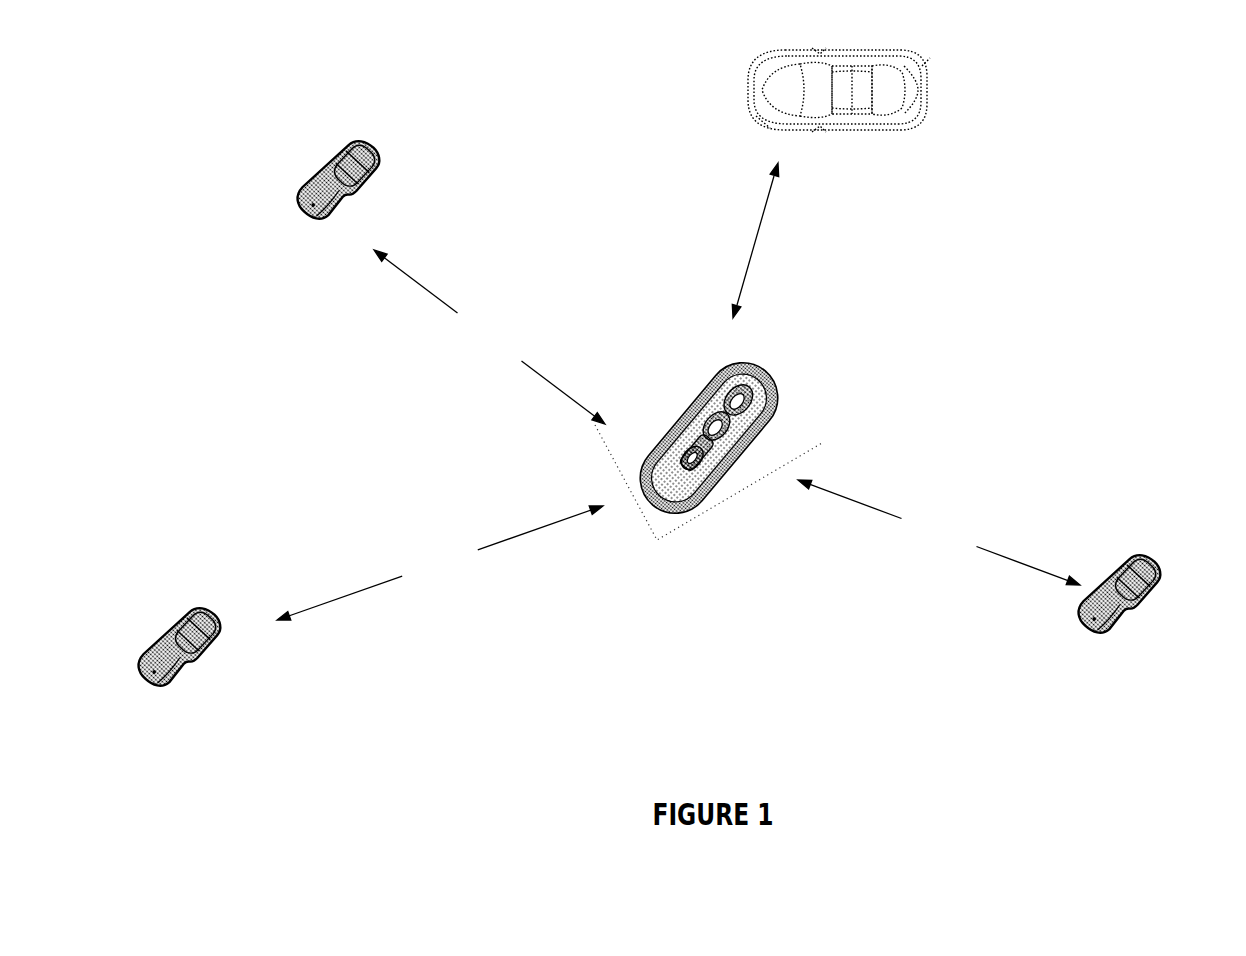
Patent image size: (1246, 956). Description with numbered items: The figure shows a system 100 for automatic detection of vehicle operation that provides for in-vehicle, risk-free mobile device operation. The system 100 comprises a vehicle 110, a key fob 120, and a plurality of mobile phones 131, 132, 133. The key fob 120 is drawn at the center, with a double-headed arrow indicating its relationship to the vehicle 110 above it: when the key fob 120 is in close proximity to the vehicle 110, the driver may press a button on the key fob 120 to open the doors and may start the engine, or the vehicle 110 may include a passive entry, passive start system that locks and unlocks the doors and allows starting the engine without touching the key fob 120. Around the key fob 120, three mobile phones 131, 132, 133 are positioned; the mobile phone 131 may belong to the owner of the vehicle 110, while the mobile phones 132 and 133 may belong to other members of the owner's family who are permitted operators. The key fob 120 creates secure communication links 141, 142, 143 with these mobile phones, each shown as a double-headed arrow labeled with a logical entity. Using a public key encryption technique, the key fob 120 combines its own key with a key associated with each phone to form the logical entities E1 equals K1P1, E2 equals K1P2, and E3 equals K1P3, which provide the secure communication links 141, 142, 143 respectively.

The system 100 is at (1118, 200).
The vehicle 110 is at (762, 72).
The key fob 120 is at (777, 386).
The mobile phone 131 is at (380, 160).
The mobile phone 132 is at (194, 606).
The mobile phone 133 is at (1160, 556).
The secure communication link 141 is at (404, 272).
The secure communication link 142 is at (333, 600).
The secure communication link 143 is at (1020, 562).